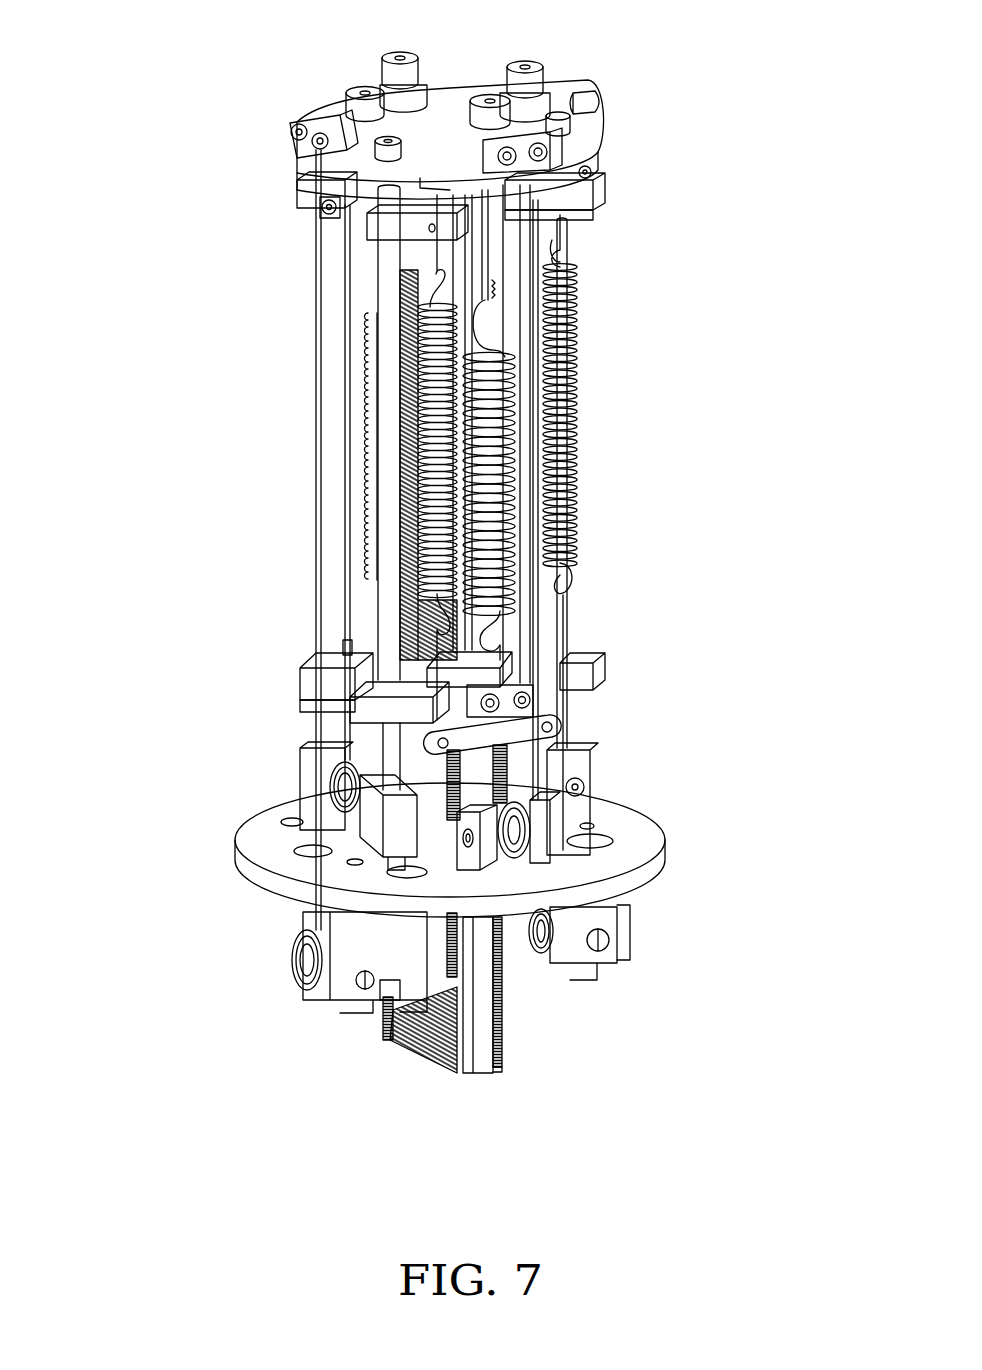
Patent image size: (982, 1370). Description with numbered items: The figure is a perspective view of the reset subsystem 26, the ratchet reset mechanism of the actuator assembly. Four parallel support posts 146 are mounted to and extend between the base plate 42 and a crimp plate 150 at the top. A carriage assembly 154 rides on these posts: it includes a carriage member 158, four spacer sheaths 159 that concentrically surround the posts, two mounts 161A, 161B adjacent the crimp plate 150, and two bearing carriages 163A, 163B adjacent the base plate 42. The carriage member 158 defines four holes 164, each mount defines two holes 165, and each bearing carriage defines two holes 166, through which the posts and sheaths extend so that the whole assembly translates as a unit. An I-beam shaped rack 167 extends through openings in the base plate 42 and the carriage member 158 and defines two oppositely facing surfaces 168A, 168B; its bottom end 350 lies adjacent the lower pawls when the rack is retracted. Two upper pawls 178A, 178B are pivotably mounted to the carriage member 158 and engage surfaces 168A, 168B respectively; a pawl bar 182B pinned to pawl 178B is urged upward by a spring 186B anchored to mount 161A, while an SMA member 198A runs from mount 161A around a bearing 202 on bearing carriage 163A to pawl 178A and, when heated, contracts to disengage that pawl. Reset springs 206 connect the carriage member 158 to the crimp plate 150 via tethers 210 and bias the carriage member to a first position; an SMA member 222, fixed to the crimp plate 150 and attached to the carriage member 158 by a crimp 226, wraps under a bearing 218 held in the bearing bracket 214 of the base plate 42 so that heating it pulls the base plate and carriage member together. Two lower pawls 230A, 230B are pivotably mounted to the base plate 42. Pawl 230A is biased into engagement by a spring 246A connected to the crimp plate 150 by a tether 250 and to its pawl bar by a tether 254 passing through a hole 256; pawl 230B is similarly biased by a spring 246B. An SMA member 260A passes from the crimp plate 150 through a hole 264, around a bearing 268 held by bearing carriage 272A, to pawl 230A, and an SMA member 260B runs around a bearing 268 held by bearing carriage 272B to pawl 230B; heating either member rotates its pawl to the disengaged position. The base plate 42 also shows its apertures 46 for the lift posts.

The reset subsystem 26 is at (213, 106).
The crimp plate 150 is at (456, 98).
The support posts 146 is at (387, 188).
The mount 161A is at (300, 188).
The mount 161B is at (582, 190).
The holes 165 is at (327, 212).
The tether 250 is at (595, 195).
The spacer sheaths 159 is at (383, 277).
The carriage member 158 is at (580, 685).
The tether 254 is at (560, 652).
The tether 210 is at (500, 262).
The reset springs 206 is at (370, 350).
The spring 186B is at (410, 408).
The spring 246B is at (318, 447).
The spring 246A is at (538, 487).
The upper pawl 178B is at (580, 753).
The upper pawl 178A is at (300, 928).
The crimp 226 is at (570, 590).
The holes 164 is at (327, 655).
The SMA member 198A is at (330, 682).
The pawl bar 182B is at (318, 662).
The SMA member 222 is at (485, 800).
The bearing 218 is at (595, 803).
The bearing carriage 163A is at (318, 752).
The bearing carriage 163B is at (593, 763).
The holes 166 is at (303, 758).
The lower pawl 230B is at (520, 968).
The hole 256 is at (600, 833).
The base plate 42 is at (603, 770).
The apertures 46 is at (290, 820).
The bearing 202 is at (300, 837).
The hole 264 is at (300, 870).
The bearing bracket 214 is at (600, 866).
The bearing 268 is at (288, 1005).
The SMA member 260A is at (312, 555).
The SMA member 260B is at (605, 960).
The bearing carriage 272A is at (283, 972).
The bearing carriage 272B is at (613, 957).
The lower pawl 230A is at (403, 1018).
The surface 168A is at (428, 1063).
The surface 168B is at (503, 1017).
The rack 167 is at (503, 1030).
The bottom end 350 is at (497, 1072).
The carriage assembly 154 is at (268, 616).